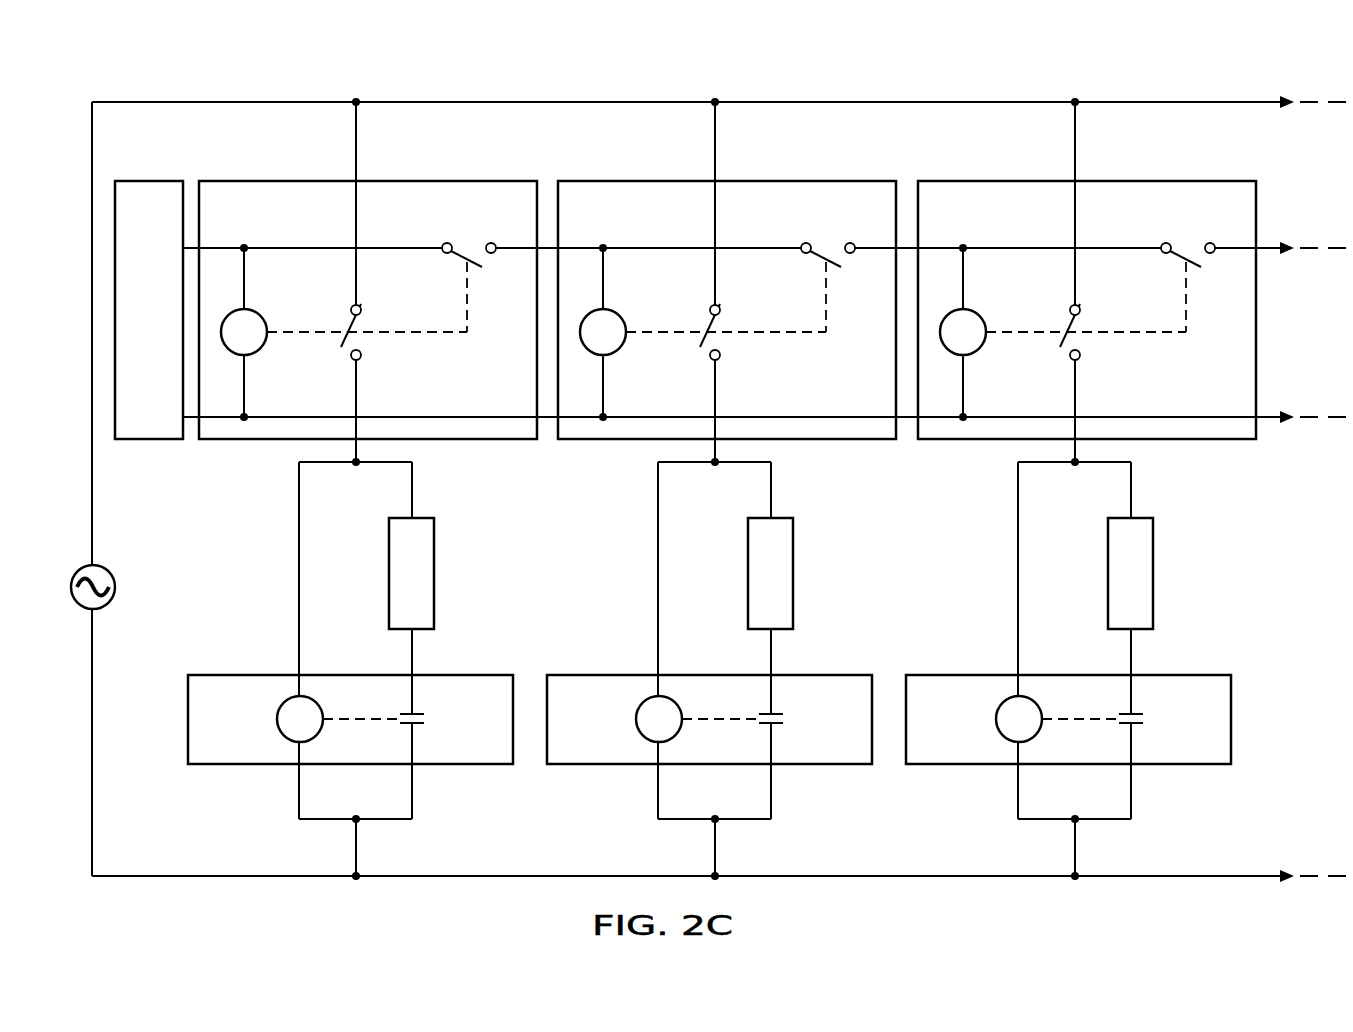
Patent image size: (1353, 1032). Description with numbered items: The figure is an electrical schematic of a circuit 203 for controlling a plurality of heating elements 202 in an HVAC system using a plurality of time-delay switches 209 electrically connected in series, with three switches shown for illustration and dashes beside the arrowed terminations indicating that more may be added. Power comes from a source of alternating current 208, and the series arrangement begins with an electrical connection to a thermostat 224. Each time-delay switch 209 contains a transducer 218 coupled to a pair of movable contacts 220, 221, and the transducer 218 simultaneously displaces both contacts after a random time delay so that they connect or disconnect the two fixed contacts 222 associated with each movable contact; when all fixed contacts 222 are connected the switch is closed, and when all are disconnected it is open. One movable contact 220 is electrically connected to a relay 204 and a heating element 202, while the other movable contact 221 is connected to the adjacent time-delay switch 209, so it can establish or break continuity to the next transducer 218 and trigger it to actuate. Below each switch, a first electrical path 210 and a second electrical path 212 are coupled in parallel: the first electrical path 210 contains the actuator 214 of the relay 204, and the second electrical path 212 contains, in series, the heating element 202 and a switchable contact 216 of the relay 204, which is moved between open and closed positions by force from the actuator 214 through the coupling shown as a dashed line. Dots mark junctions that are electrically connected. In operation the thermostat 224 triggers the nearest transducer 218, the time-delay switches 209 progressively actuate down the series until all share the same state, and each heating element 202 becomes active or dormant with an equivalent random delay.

The heating element 202 is at (435, 578).
The circuit 203 is at (1052, 76).
The relay 204 is at (243, 776).
The source of alternating current 208 is at (116, 586).
The time-delay switch 209 is at (276, 172).
The first electrical path 210 is at (299, 576).
The second electrical path 212 is at (412, 490).
The actuator 214 is at (277, 720).
The switchable contact 216 is at (424, 722).
The transducer 218 is at (263, 345).
The movable contact 220 is at (347, 332).
The movable contact 221 is at (476, 266).
The fixed contacts 222 is at (446, 243).
The thermostat 224 is at (170, 326).